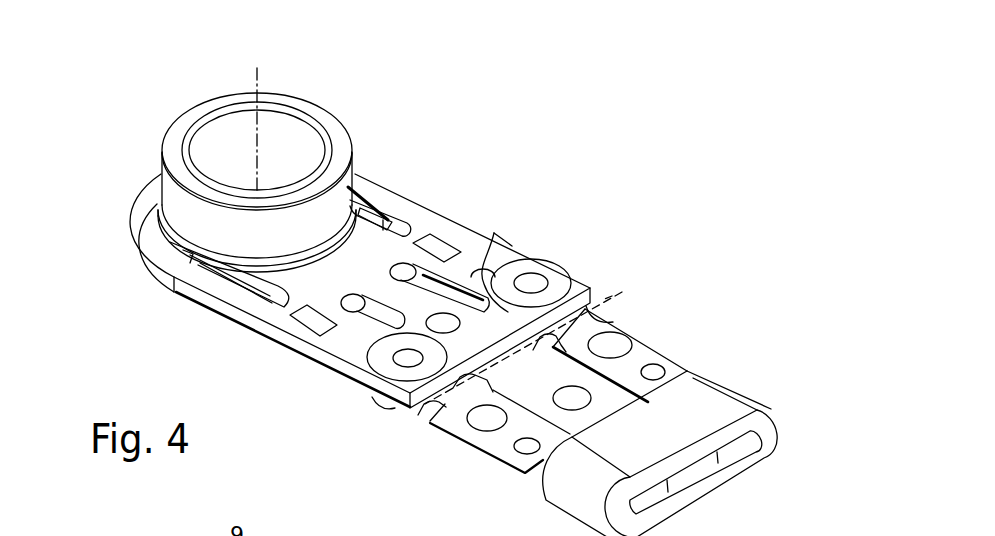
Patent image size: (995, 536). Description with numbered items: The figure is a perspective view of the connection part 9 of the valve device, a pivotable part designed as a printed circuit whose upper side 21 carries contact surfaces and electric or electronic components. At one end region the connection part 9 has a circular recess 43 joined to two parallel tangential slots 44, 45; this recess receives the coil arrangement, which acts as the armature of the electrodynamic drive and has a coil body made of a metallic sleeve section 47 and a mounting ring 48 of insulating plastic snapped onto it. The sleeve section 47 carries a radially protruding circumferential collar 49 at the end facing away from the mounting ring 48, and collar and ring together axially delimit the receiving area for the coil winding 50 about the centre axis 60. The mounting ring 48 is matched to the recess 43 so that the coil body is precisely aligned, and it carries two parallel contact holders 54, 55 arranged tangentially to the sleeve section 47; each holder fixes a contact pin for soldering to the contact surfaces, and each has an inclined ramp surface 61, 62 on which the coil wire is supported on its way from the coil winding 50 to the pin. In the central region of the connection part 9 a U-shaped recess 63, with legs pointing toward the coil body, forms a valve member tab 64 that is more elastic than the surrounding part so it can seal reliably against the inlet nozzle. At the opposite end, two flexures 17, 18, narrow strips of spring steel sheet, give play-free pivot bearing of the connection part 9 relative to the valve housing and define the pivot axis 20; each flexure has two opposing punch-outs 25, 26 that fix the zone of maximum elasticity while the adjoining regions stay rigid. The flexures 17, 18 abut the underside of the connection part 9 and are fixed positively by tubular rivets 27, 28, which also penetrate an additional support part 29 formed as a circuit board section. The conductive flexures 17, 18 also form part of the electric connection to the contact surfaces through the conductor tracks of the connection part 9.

The connection part 9 is at (662, 188).
The flexure 17 is at (650, 353).
The flexure 18 is at (500, 446).
The pivot axis 20 is at (612, 296).
The upper side 21 is at (160, 280).
The punch-out 25 is at (540, 336).
The punch-out 26 is at (467, 392).
The tubular rivet 27 is at (537, 270).
The tubular rivet 28 is at (387, 370).
The support part 29 is at (510, 247).
The circular recess 43 is at (170, 235).
The tangential slot 44 is at (407, 220).
The tangential slot 45 is at (280, 303).
The sleeve section 47 is at (298, 135).
The mounting ring 48 is at (170, 247).
The circumferential collar 49 is at (168, 140).
The coil winding 50 is at (187, 207).
The contact holder 54 is at (360, 185).
The contact holder 55 is at (213, 280).
The centre axis 60 is at (257, 68).
The ramp surface 61 is at (378, 217).
The ramp surface 62 is at (247, 313).
The U-shaped recess 63 is at (423, 272).
The valve member tab 64 is at (397, 303).